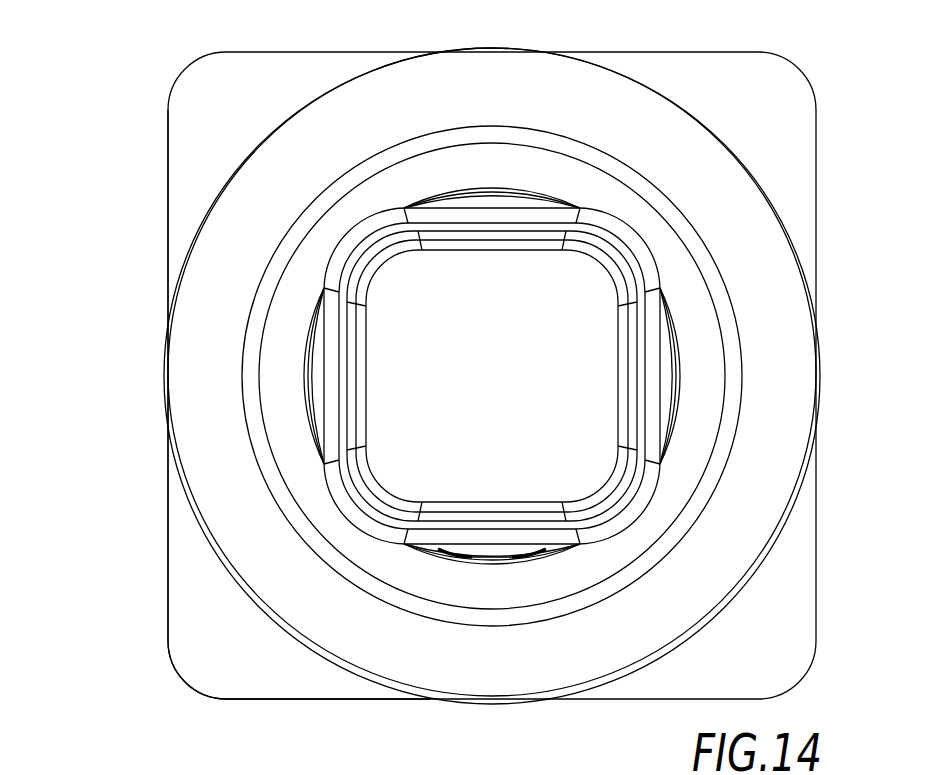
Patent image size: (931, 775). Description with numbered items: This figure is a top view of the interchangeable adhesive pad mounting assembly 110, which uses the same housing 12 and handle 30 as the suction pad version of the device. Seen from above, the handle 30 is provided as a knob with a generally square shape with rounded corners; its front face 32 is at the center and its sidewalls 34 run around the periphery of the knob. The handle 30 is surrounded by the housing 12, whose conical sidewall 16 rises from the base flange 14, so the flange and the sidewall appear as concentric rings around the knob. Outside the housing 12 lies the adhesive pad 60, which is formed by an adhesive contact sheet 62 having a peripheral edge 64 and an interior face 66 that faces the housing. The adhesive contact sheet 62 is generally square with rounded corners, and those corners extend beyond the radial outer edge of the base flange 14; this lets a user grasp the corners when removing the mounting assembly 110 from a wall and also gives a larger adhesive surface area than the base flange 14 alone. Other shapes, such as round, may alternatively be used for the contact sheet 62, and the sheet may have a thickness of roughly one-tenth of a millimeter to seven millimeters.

The mounting assembly 110 is at (140, 54).
The adhesive pad 60 is at (172, 196).
The housing 12 is at (180, 359).
The base flange 14 is at (207, 468).
The conical sidewall 16 is at (285, 400).
The handle 30 is at (620, 401).
The front face 32 is at (502, 384).
The sidewalls 34 is at (580, 545).
The peripheral edge 64 is at (168, 576).
The adhesive contact sheet 62 is at (197, 657).
The interior face 66 is at (245, 643).